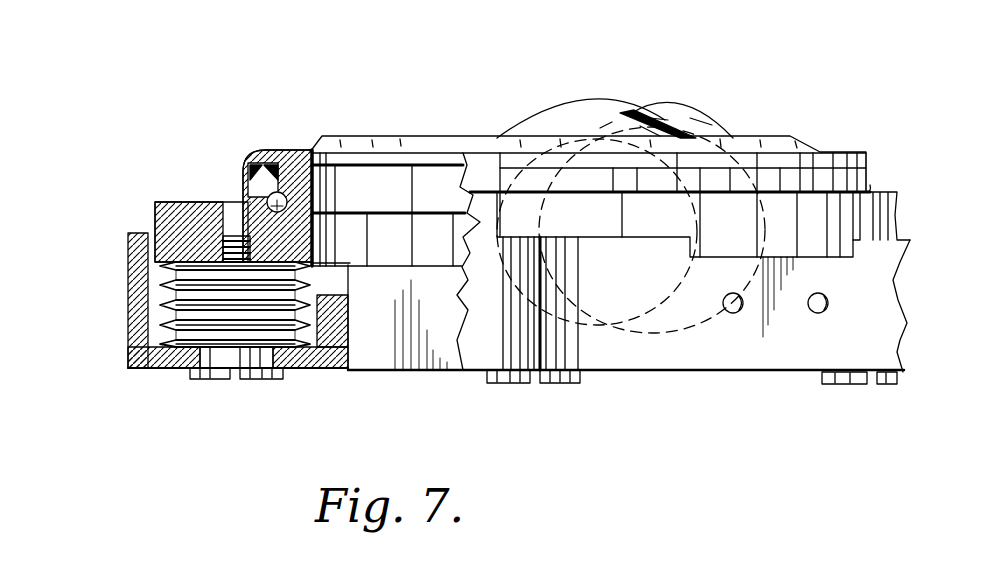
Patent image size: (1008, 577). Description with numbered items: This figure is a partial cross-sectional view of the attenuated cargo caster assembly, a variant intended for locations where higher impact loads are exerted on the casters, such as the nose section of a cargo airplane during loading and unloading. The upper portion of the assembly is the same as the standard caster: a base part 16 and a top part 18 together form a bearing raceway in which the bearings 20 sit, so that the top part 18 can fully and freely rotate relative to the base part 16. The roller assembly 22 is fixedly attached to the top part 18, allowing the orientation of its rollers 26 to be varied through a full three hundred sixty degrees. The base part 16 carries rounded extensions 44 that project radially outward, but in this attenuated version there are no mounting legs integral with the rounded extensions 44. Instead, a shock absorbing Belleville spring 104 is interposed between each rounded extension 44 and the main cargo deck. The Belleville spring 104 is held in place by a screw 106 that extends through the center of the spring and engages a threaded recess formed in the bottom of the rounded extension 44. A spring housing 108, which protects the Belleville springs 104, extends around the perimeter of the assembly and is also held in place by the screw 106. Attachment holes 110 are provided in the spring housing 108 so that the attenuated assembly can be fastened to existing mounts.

The base part 16 is at (165, 190).
The top part 18 is at (280, 143).
The bearings 20 is at (265, 200).
The roller assembly 22 is at (520, 132).
The rollers 26 is at (660, 108).
The rounded extensions 44 is at (160, 220).
The Belleville spring 104 is at (160, 303).
The screw 106 is at (267, 380).
The spring housing 108 is at (132, 370).
The attachment holes 110 is at (735, 313).